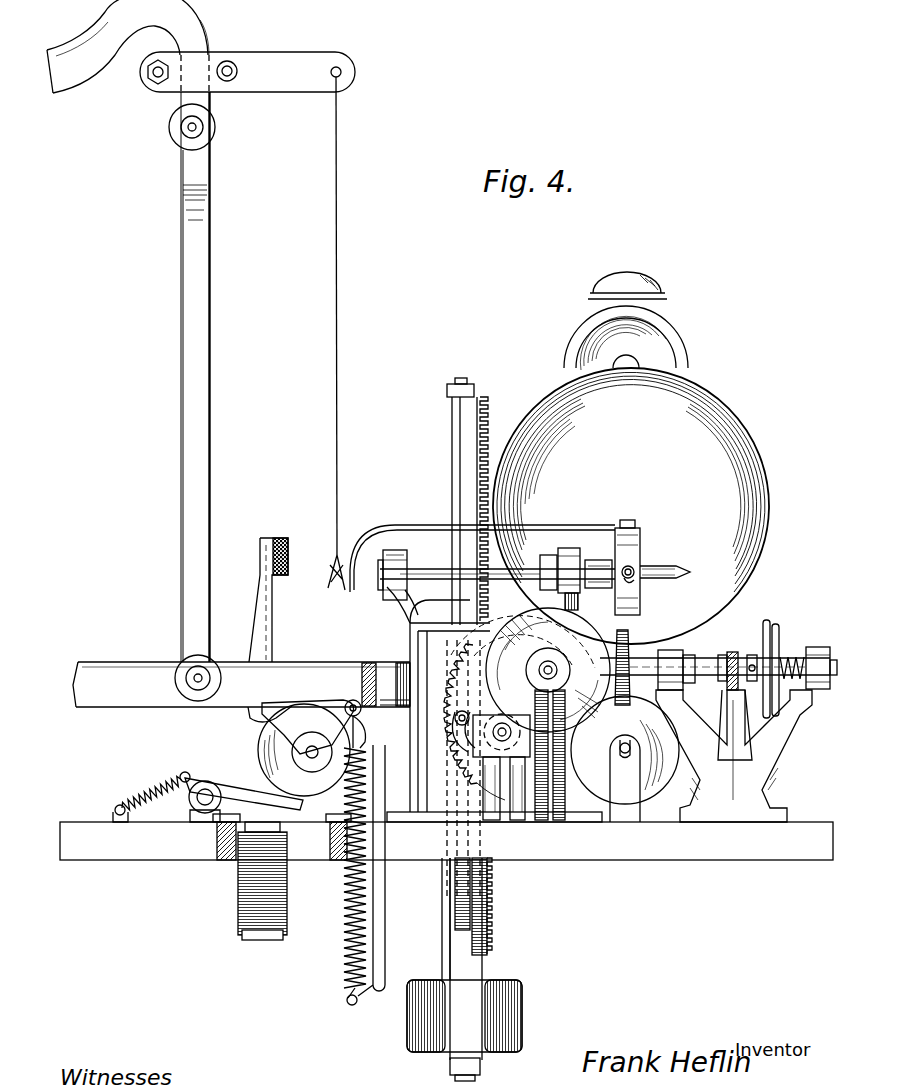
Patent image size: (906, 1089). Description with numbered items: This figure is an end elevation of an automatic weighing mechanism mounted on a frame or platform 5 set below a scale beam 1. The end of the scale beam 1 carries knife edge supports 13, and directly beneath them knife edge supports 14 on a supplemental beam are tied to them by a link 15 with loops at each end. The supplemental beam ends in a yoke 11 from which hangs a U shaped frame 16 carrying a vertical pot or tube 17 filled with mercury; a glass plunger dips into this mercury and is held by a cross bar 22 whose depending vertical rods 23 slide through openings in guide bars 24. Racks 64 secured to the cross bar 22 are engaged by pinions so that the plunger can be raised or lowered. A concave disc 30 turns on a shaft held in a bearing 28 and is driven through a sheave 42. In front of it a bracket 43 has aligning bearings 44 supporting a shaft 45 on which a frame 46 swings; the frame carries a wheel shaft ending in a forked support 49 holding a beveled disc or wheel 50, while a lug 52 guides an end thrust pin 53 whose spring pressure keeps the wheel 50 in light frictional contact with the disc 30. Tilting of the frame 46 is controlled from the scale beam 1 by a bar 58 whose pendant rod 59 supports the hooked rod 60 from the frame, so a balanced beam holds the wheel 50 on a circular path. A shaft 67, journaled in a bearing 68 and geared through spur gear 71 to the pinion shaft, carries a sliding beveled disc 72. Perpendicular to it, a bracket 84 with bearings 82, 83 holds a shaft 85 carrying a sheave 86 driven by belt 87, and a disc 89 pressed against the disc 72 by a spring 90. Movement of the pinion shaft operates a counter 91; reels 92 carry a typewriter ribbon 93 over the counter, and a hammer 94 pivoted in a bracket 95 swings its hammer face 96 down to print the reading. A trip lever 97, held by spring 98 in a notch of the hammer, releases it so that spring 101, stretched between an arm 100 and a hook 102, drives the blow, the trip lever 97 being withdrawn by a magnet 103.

The scale beam 1 is at (80, 70).
The frame or platform 5 is at (640, 860).
The yoke 11 is at (393, 663).
The knife edge supports 13 is at (200, 124).
The knife edge supports 14 is at (203, 681).
The link 15 is at (203, 288).
The U shaped frame 16 is at (468, 975).
The pot or tube 17 is at (445, 972).
The cross bar 22 is at (474, 392).
The vertical rod 23 is at (452, 428).
The guide bar 24 is at (466, 600).
The bearing 28 is at (633, 275).
The concave disc 30 is at (631, 506).
The sheave 42 is at (680, 340).
The bracket 43 is at (425, 742).
The aligning bearings 44 is at (383, 578).
The shaft 45 is at (430, 569).
The frame 46 is at (596, 562).
The forked support 49 is at (641, 542).
The disc or wheel 50 is at (681, 568).
The lug 52 is at (634, 570).
The end thrust pin 53 is at (634, 580).
The bar 58 is at (308, 62).
The pendant rod 59 is at (340, 185).
The rod 60 is at (392, 524).
The racks 64 is at (485, 420).
The shaft 67 is at (556, 672).
The bearing 68 is at (544, 672).
The spur gear 71 is at (449, 762).
The disc 72 is at (601, 632).
The bearing 82 is at (820, 647).
The bearing 83 is at (672, 650).
The bracket 84 is at (734, 737).
The shaft 85 is at (703, 669).
The sheave 86 is at (780, 632).
The belt 87 is at (766, 620).
The disc 89 is at (626, 643).
The spring 90 is at (795, 657).
The registering mechanism or counter 91 is at (468, 745).
The reels 92 is at (262, 742).
The typewriter ribbon 93 is at (396, 714).
The hammer 94 is at (257, 576).
The bracket 95 is at (330, 812).
The hammer face 96 is at (280, 538).
The trip lever 97 is at (241, 803).
The spring 98 is at (150, 802).
The arm 100 is at (351, 702).
The spring 101 is at (347, 893).
The hook 102 is at (384, 903).
The magnet 103 is at (238, 893).